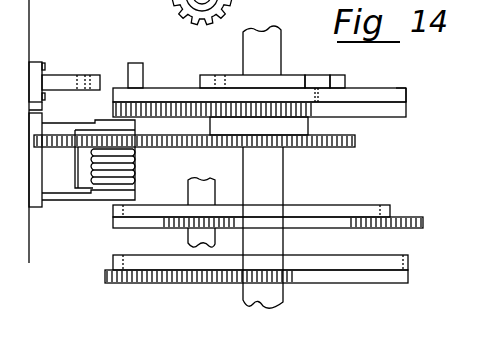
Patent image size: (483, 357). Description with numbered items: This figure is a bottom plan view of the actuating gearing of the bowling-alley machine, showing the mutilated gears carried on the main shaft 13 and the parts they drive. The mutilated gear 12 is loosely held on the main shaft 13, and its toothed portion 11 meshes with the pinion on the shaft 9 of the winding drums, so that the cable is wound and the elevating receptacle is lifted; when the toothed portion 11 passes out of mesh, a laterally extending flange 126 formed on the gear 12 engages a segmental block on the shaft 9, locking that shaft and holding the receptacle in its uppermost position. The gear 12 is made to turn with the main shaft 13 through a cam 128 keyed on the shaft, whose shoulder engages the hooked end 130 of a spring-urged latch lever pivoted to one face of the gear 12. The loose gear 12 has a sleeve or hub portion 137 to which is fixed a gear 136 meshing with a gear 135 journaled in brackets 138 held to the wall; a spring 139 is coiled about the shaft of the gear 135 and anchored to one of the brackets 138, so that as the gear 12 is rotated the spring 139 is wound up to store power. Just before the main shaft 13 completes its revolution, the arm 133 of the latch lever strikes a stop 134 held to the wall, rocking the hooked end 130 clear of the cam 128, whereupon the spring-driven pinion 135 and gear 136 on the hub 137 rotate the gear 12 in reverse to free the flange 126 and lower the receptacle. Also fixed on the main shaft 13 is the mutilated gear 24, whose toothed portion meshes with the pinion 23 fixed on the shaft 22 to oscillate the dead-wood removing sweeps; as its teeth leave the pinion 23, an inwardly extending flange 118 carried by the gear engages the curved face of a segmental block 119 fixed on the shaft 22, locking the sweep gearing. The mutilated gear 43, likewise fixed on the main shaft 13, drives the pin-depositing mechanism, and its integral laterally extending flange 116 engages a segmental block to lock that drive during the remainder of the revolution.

The shaft 9 is at (134, 70).
The toothed portion 11 is at (157, 100).
The mutilated gear 12 is at (395, 108).
The main shaft 13 is at (271, 171).
The shaft 22 is at (177, 0).
The pinion 23 is at (213, 15).
The mutilated gear 24 is at (413, 218).
The mutilated gear 43 is at (190, 270).
The laterally extending flange 116 is at (383, 262).
The inwardly extending flange 118 is at (362, 208).
The segmental block 119 is at (232, 0).
The laterally extending flange 126 is at (435, 76).
The cam 128 is at (285, 78).
The hooked end 130 is at (316, 80).
The arm 133 is at (340, 81).
The stop 134 is at (65, 80).
The gear 135 is at (134, 177).
The gear 136 is at (356, 143).
The sleeve or hub portion 137 is at (300, 125).
The brackets 138 is at (55, 177).
The spring 139 is at (135, 179).